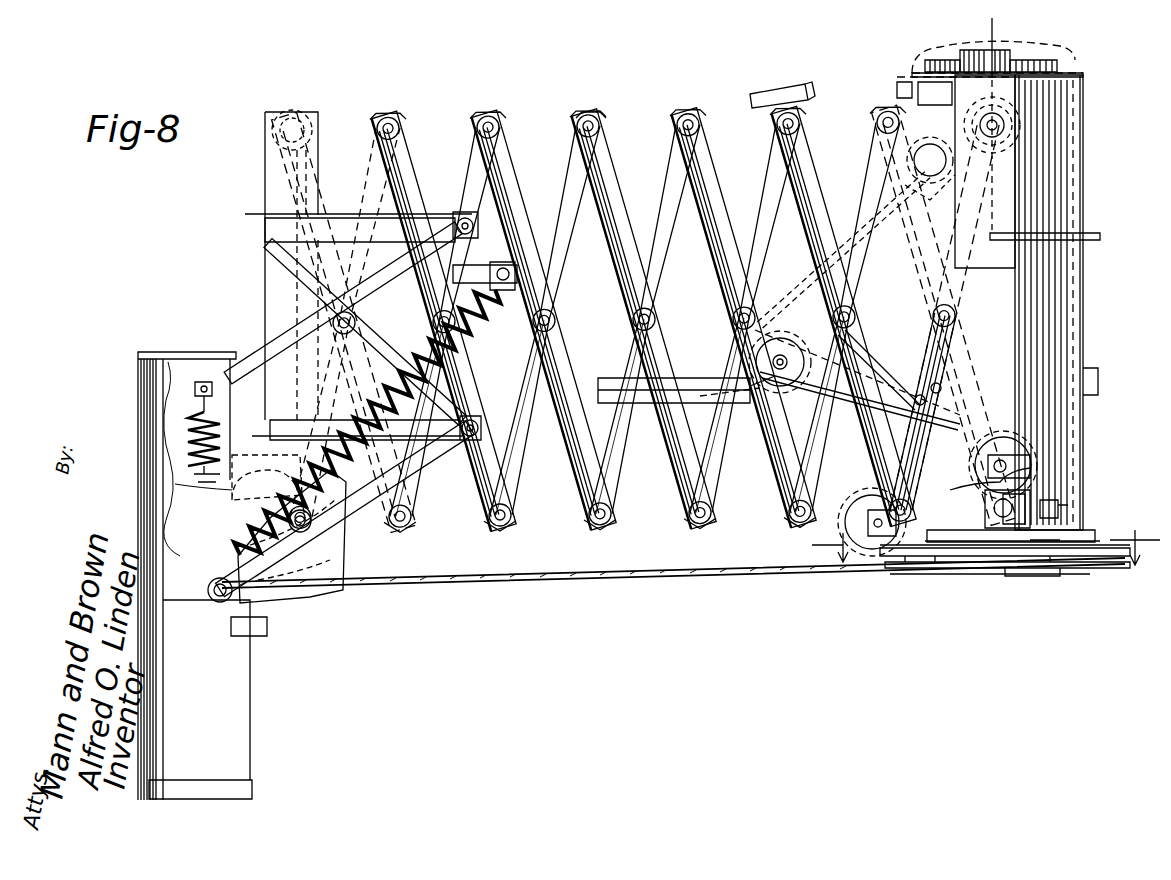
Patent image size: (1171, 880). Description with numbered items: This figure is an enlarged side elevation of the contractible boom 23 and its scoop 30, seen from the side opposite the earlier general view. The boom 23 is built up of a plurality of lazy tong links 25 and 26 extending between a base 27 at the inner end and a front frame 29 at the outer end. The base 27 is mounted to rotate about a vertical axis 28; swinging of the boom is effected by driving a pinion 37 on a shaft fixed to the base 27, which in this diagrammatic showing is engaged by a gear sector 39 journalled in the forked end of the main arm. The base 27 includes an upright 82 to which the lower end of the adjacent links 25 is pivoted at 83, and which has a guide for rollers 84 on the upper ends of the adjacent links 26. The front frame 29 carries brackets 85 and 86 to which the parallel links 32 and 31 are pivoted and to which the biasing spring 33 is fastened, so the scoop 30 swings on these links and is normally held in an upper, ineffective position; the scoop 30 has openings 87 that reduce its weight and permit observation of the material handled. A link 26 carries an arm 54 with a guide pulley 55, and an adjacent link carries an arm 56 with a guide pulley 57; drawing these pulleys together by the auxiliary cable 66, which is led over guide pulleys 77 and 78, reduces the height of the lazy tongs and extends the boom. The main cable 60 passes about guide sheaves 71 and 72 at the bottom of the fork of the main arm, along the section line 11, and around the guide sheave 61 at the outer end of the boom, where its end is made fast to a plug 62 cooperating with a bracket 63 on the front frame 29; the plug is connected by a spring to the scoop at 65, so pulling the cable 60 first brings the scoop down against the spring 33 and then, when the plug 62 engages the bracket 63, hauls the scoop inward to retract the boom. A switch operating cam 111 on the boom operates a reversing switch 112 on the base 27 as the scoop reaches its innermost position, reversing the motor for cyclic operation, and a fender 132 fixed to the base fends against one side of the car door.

The section line 11- 11 is at (986, 539).
The contractible boom 23 is at (592, 116).
The lazy tong link 25 is at (882, 128).
The lazy tong link 26 is at (776, 166).
The base 27 is at (1015, 190).
The vertical axis 28 is at (992, 28).
The front frame 29 is at (265, 166).
The scoop 30 is at (142, 370).
The parallel link 31 is at (340, 516).
The parallel link 32 is at (298, 340).
The spring 33 is at (430, 324).
The pinion 37 is at (1008, 52).
The gear sector 39 is at (1057, 60).
The arm 54 is at (792, 342).
The guide pulley 55 is at (784, 338).
The arm 56 is at (918, 145).
The guide pulley 57 is at (940, 160).
The main cable 60 is at (556, 576).
The guide sheave 61 is at (312, 562).
The plug 62 is at (266, 480).
The bracket 63 is at (176, 484).
The scoop connection 65 is at (208, 388).
The auxiliary cable 66 is at (822, 278).
The guide sheave 71 is at (905, 580).
The guide sheave 72 is at (1110, 568).
The guide pulley 77 is at (862, 510).
The guide pulley 78 is at (978, 447).
The upright 82 is at (1032, 490).
The pivot 83 is at (1032, 508).
The roller 84 is at (988, 108).
The bracket 85 is at (306, 412).
The bracket 86 is at (342, 216).
The opening 87 is at (170, 529).
The switch operating cam 111 is at (806, 86).
The reversing switch 112 is at (898, 84).
The fender 132 is at (620, 378).